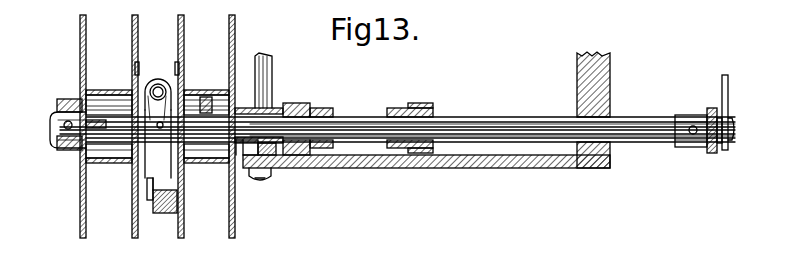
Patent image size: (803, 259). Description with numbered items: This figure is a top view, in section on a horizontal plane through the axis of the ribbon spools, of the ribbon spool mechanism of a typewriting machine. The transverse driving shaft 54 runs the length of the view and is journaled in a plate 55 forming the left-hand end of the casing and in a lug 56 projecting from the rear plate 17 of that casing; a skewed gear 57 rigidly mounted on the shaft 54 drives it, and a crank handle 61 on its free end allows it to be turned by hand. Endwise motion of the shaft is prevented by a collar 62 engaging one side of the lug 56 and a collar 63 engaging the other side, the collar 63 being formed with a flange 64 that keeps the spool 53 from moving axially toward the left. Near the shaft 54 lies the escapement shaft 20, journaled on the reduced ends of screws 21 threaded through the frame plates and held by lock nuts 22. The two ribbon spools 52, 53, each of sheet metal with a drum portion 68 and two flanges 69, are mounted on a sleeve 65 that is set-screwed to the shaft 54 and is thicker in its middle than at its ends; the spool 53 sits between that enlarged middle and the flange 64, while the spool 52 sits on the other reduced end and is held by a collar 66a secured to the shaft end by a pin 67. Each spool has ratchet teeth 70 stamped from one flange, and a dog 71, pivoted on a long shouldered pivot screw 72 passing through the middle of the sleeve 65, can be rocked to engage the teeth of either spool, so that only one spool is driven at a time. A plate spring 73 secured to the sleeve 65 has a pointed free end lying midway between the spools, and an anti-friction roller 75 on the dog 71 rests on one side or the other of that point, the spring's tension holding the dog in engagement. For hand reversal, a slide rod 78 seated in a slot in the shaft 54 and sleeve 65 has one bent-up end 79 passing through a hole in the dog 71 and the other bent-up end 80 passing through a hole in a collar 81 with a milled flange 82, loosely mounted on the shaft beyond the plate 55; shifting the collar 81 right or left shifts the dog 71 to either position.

The rear plate 17 is at (517, 168).
The shaft 20 is at (272, 66).
The screws 21 is at (258, 180).
The lock nuts 22 is at (273, 172).
The ribbon spool 52 is at (80, 63).
The ribbon spool 53 is at (235, 26).
The driving shaft 54 is at (487, 117).
The plate 55 is at (610, 90).
The lug 56 is at (299, 103).
The skewed gear 57 is at (421, 103).
The crank handle 61 is at (722, 78).
The collar 62 is at (324, 108).
The collar 63 is at (277, 106).
The flange 64 is at (238, 106).
The sleeve 65 is at (208, 97).
The collar 66a is at (58, 100).
The pin 67 is at (56, 128).
The drum portion 68 is at (105, 90).
The flanges 69 is at (132, 27).
The ratchet teeth 70 is at (137, 64).
The dog 71 is at (150, 196).
The pivot screw 72 is at (158, 84).
The plate spring 73 is at (150, 193).
The anti-friction roller 75 is at (165, 213).
The slide rod 78 is at (548, 130).
The bent up end 79 is at (160, 128).
The bent up end 80 is at (692, 126).
The collar 81 is at (682, 147).
The milled flange 82 is at (711, 153).